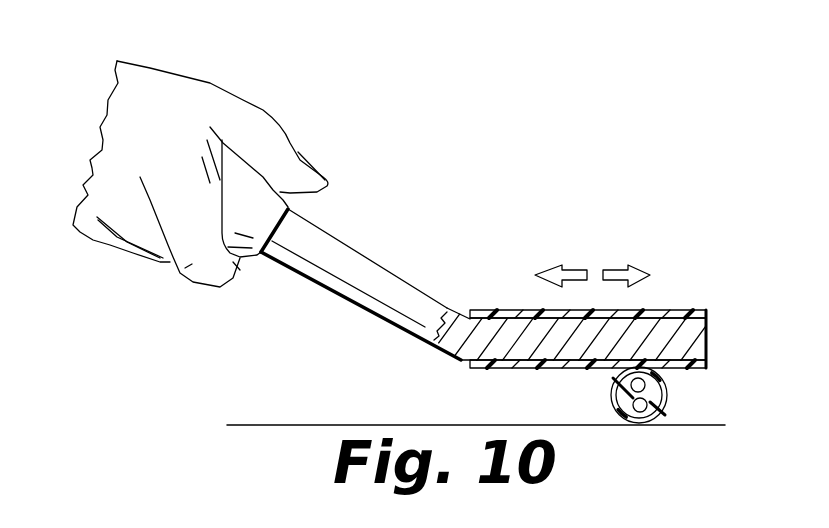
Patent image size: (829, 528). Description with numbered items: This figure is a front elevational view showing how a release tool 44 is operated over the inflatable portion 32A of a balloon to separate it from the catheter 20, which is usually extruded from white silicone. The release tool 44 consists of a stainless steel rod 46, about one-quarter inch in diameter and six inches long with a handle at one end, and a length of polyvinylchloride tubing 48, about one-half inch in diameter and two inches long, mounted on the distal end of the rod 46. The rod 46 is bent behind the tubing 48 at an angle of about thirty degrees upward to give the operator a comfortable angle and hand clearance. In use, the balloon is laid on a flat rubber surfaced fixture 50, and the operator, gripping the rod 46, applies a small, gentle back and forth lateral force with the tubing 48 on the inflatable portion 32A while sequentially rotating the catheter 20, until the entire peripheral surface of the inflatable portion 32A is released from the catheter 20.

The catheter 20 is at (630, 395).
The inflatable portion of the balloon 32A is at (612, 396).
The release tool 44 is at (410, 382).
The stainless steel rod 46 is at (318, 283).
The polyvinylchloride tubing 48 is at (487, 310).
The flat rubber surfaced fixture 50 is at (311, 424).